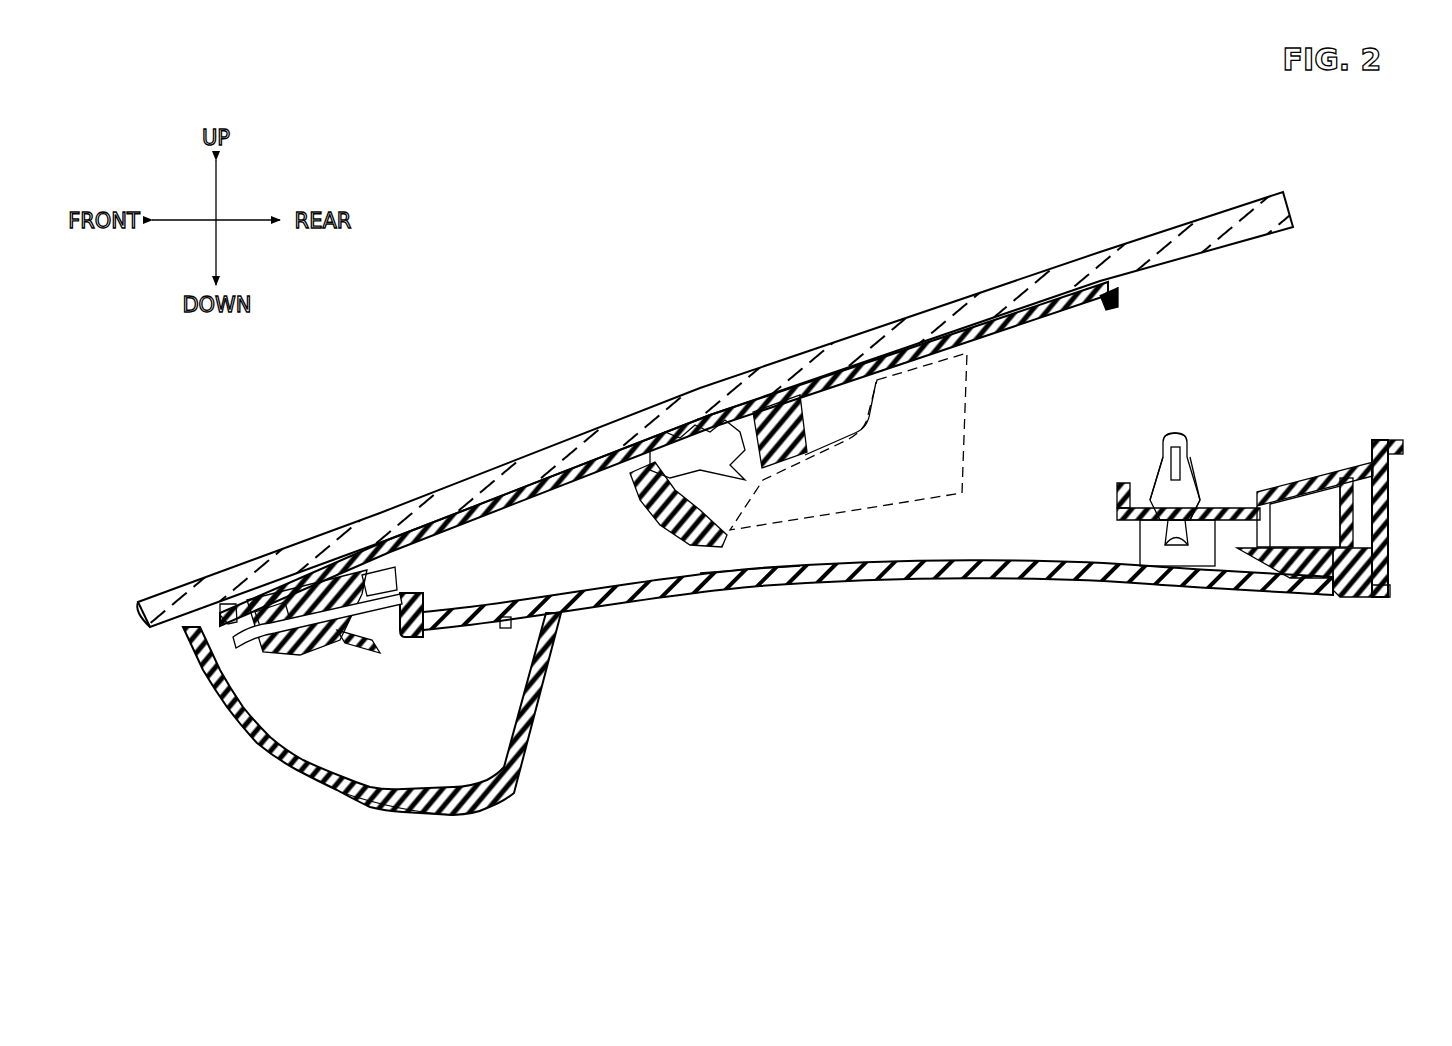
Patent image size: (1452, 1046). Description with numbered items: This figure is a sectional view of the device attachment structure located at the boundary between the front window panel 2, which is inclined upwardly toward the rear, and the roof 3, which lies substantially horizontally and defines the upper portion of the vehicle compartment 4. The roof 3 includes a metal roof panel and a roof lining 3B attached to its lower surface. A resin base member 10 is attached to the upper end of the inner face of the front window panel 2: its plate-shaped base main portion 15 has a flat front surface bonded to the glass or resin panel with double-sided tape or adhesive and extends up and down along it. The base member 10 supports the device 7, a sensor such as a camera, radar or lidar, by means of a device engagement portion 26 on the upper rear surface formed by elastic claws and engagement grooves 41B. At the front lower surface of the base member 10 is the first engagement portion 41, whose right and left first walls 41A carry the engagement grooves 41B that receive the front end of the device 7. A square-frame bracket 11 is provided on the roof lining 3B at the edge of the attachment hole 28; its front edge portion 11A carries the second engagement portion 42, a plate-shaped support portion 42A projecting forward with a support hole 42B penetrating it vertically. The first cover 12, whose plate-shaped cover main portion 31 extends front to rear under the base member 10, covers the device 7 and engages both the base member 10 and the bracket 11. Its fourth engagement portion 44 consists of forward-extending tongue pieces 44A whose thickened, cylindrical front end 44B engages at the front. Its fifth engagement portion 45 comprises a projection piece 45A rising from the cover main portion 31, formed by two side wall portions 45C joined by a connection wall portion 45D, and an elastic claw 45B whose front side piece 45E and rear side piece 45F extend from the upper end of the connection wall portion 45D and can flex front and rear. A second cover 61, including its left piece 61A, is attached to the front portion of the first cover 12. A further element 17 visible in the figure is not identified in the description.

The front window panel 2 is at (1118, 250).
The roof 3 is at (1392, 493).
The roof lining 3B is at (1372, 598).
The vehicle compartment 4 is at (971, 716).
The device 7 is at (920, 505).
The base member 10 is at (993, 343).
The bracket 11 is at (1340, 460).
The front edge portion 11A is at (1298, 495).
The first cover 12 is at (820, 577).
The base main portion 15 is at (848, 372).
The engagement hook 17 is at (682, 428).
The device engagement portion 26 is at (722, 493).
The attachment hole 28 is at (1395, 583).
The cover main portion 31 is at (735, 585).
The first engagement portion 41 is at (300, 662).
The first wall 41A is at (208, 632).
The engagement groove 41B is at (390, 638).
The second engagement portion 42 is at (1117, 478).
The support portion 42A is at (1115, 510).
The support hole 42B is at (1170, 540).
The fourth engagement portion 44 is at (405, 590).
The tongue piece 44A is at (385, 590).
The front end 44B is at (300, 595).
The fifth engagement portion 45 is at (1187, 420).
The projection piece 45A is at (1165, 428).
The elastic claw 45B is at (1205, 470).
The side wall portion 45C is at (1192, 435).
The connection wall portion 45D is at (1185, 545).
The front side piece 45E is at (1155, 500).
The rear side piece 45F is at (1203, 492).
The second cover 61 is at (430, 818).
The left piece 61A is at (375, 800).